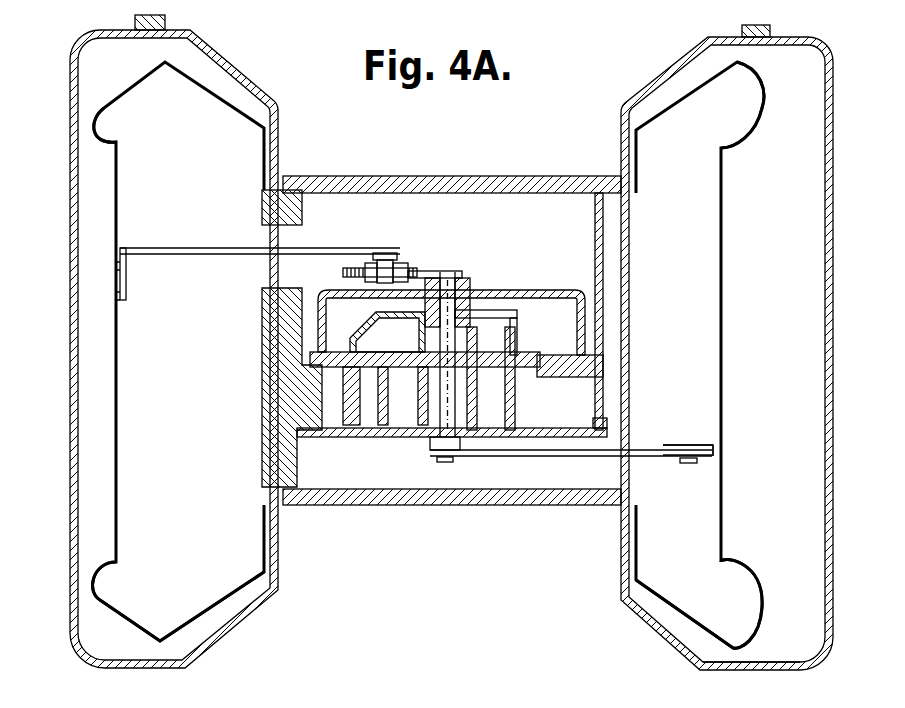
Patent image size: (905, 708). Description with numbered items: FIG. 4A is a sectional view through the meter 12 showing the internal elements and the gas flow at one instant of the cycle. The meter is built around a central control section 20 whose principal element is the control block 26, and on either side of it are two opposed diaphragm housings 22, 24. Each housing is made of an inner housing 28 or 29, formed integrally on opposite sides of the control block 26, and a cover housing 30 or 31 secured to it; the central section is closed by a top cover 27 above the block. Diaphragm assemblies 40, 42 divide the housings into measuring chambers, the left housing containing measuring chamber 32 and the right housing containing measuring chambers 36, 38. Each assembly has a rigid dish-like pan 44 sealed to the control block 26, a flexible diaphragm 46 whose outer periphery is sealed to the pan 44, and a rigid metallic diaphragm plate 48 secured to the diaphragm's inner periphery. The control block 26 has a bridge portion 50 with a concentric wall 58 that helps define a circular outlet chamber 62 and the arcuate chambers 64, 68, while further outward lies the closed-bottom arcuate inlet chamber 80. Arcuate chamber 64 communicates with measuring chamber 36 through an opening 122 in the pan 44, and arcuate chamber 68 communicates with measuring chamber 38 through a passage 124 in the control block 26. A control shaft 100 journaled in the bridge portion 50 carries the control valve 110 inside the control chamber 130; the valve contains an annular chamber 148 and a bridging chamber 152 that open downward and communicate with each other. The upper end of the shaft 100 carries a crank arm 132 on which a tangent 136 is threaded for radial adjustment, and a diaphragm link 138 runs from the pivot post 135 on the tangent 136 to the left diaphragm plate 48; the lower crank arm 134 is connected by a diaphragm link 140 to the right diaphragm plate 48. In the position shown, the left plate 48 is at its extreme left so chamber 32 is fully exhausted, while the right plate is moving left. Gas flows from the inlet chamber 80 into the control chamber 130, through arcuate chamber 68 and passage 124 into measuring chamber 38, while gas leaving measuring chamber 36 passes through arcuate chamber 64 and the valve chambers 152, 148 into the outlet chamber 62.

The housing 12 is at (534, 505).
The central control section 20 is at (415, 174).
The diaphragm housing 22 is at (170, 16).
The diaphragm housing 24 is at (735, 22).
The control block 26 is at (298, 290).
The top plate 27 is at (522, 190).
The inner housing 28 is at (238, 66).
The inner housing 29 is at (493, 515).
The cover housing 30 is at (75, 54).
The cover housing 31 is at (832, 60).
The measuring chamber 32 is at (88, 194).
The measuring chamber 36 is at (687, 224).
The measuring chamber 38 is at (792, 230).
The diaphragm assembly 40 is at (100, 150).
The diaphragm assembly 42 is at (670, 630).
The pan 44 is at (228, 585).
The diaphragm 46 is at (94, 118).
The diaphragm plate 48 is at (108, 360).
The bridge portion 50 is at (342, 440).
The concentric wall 58 is at (350, 430).
The outlet chamber 62 is at (416, 430).
The arcuate chamber 64 is at (370, 430).
The arcuate chamber 68 is at (522, 382).
The arcuate inlet chamber 80 is at (332, 430).
The control shaft 100 is at (455, 272).
The control valve 110 is at (475, 300).
The opening 122 is at (635, 430).
The passage 124 is at (603, 414).
The control chamber 130 is at (575, 290).
The crank arm 132 is at (432, 270).
The crank arm 134 is at (408, 430).
The pivot post 135 is at (380, 262).
The tangent 136 is at (390, 262).
The diaphragm link 138 is at (210, 244).
The diaphragm link 140 is at (590, 457).
The annular chamber 148 is at (510, 330).
The bridging chamber 152 is at (406, 344).